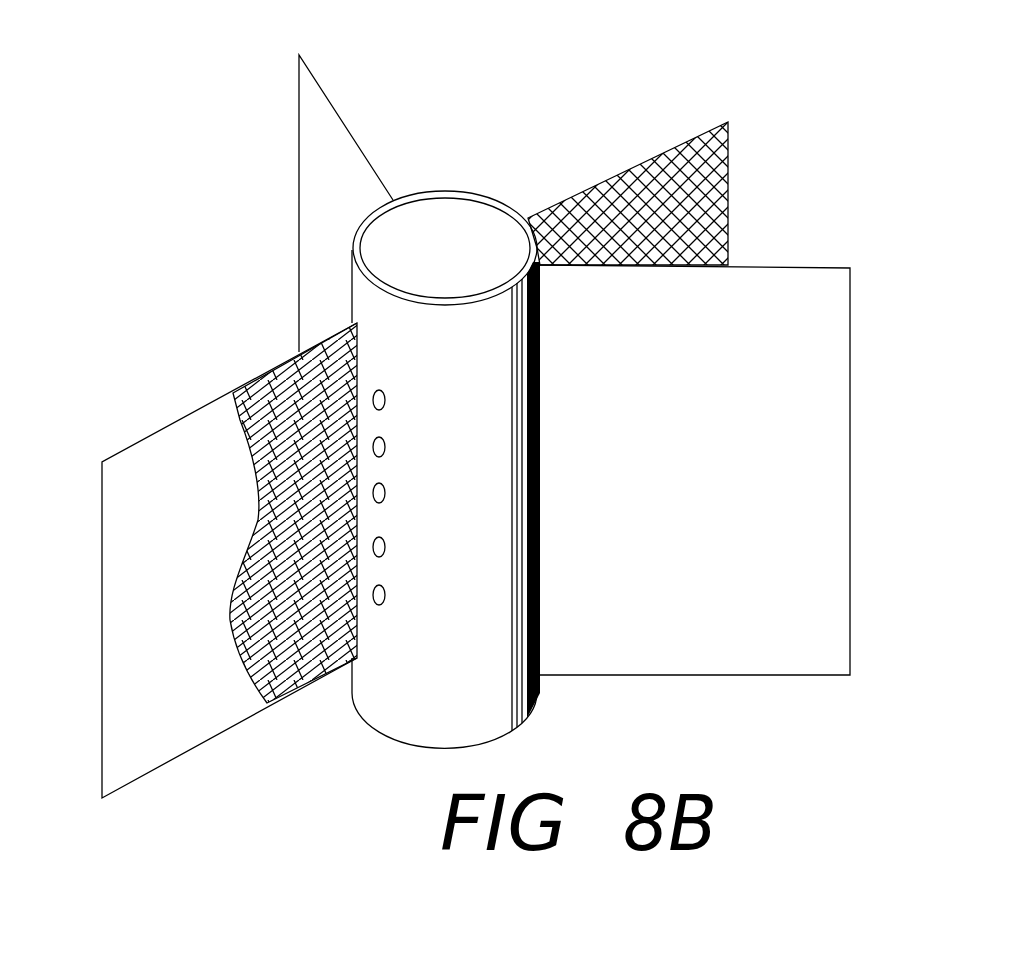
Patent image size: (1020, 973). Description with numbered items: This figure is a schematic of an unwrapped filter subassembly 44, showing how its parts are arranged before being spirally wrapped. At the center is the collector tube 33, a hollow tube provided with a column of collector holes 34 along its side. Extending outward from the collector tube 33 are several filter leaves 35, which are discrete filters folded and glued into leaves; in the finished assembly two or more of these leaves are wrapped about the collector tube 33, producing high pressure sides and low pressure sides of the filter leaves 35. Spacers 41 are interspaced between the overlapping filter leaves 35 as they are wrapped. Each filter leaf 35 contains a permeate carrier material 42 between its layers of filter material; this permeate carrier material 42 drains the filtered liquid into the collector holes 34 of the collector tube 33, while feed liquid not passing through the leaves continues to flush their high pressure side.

The collector tube 33 is at (467, 198).
The collector holes 34 is at (385, 549).
The filter leaves 35 is at (330, 97).
The spacers 41 is at (685, 197).
The permeate carrier material 42 is at (317, 637).
The filter subassembly 44 is at (185, 167).